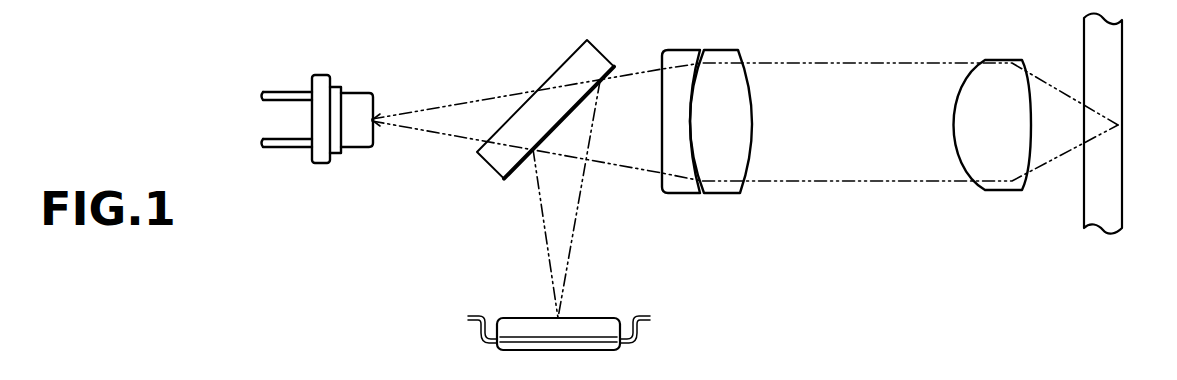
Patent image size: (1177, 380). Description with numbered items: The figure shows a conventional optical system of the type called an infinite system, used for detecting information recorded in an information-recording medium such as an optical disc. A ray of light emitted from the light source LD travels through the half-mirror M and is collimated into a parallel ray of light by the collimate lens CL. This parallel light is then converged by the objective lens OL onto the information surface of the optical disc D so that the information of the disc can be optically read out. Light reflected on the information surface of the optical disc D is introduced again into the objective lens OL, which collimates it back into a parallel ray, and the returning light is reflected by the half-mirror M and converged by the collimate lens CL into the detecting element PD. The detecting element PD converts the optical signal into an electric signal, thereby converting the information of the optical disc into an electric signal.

The light source LD is at (318, 139).
The half-mirror M is at (586, 40).
The collimate lens CL is at (718, 50).
The objective lens OL is at (1003, 59).
The optical disc D is at (1122, 40).
The detecting element PD is at (559, 348).